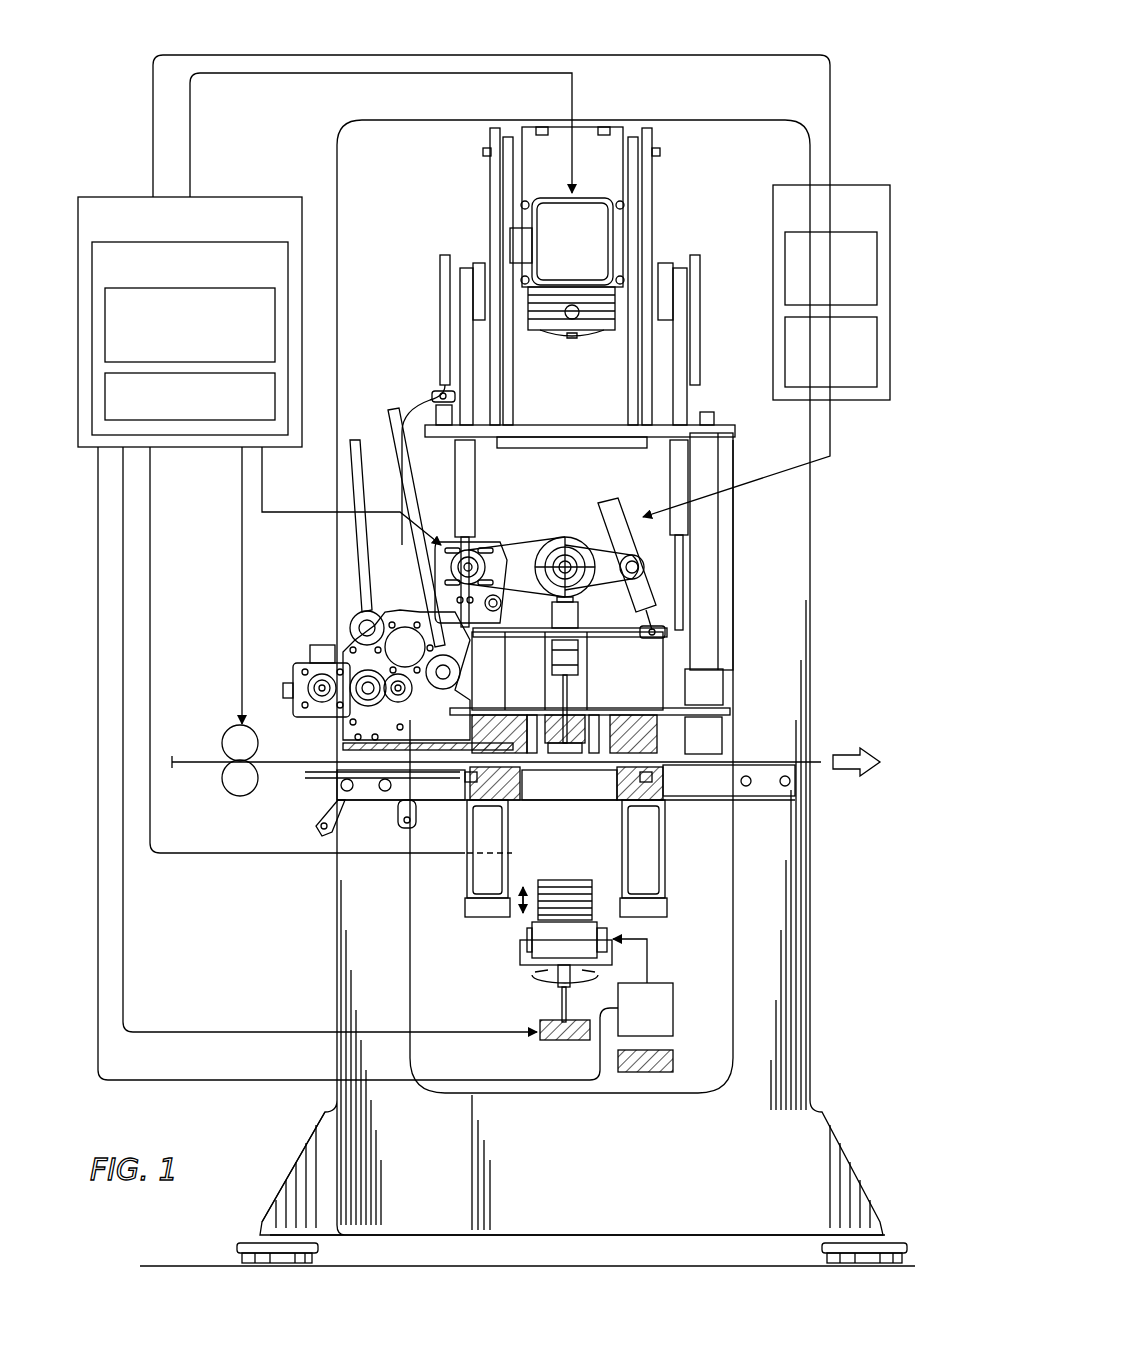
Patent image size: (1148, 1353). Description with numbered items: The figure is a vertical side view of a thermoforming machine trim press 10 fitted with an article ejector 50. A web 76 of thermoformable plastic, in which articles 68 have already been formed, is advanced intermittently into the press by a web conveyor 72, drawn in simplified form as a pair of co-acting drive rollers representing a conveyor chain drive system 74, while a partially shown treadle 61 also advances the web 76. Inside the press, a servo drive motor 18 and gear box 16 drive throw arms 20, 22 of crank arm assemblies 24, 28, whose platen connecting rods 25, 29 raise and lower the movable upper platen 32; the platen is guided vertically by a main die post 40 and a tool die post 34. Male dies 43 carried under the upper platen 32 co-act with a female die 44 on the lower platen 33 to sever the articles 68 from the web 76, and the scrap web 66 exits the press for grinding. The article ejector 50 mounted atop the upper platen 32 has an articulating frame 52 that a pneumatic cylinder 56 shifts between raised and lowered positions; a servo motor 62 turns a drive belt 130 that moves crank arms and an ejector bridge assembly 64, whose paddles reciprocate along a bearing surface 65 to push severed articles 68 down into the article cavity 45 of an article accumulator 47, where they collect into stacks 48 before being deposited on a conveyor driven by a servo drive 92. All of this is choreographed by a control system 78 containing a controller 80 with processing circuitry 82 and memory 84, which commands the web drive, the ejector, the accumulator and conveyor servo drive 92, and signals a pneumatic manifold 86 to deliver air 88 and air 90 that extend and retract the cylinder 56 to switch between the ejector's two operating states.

The thermoforming machine trim press 10 is at (843, 101).
The gear box 16 is at (598, 127).
The servo drive motor 18 is at (567, 268).
The throw arm 20 is at (466, 268).
The throw arm 22 is at (680, 268).
The crank arm assembly 24 is at (462, 292).
The platen connecting rod 25 is at (455, 392).
The crank arm assembly 28 is at (690, 288).
The platen connecting rod 29 is at (690, 395).
The upper platen 32 is at (574, 620).
The lower platen 33 is at (462, 802).
The tool die post 34 is at (440, 258).
The main die post 40 is at (712, 635).
The male die 43 is at (618, 725).
The female die 44 is at (655, 796).
The article cavity 45 is at (520, 795).
The article accumulator 47 is at (605, 803).
The stack 48 is at (548, 877).
The article ejector 50 is at (553, 544).
The articulating frame 52 is at (598, 542).
The pneumatic cylinder 56 is at (630, 530).
The treadle 61 is at (352, 612).
The servo motor 62 is at (487, 549).
The ejector bridge assembly 64 is at (555, 682).
The bearing surface 65 is at (572, 700).
The scrap web 66 is at (750, 765).
The article 68 is at (305, 772).
The web conveyor 72 is at (212, 728).
The conveyor chain drive system 74 is at (255, 726).
The web 76 is at (278, 758).
The control system 78 is at (225, 195).
The controller 80 is at (292, 265).
The processing circuitry 82 is at (278, 322).
The memory 84 is at (278, 388).
The pneumatic manifold 86 is at (845, 185).
The air 88 is at (785, 292).
The air 90 is at (785, 358).
The servo drive 92 is at (606, 1005).
The drive belt 130 is at (555, 540).